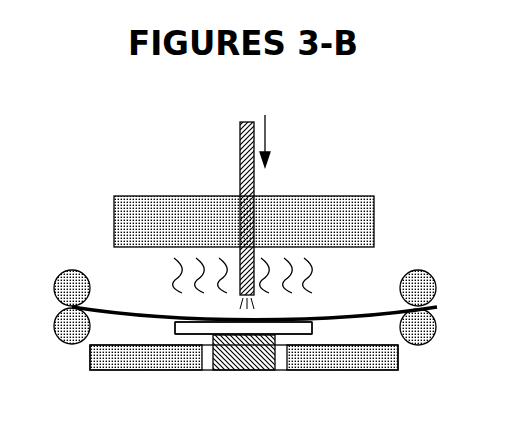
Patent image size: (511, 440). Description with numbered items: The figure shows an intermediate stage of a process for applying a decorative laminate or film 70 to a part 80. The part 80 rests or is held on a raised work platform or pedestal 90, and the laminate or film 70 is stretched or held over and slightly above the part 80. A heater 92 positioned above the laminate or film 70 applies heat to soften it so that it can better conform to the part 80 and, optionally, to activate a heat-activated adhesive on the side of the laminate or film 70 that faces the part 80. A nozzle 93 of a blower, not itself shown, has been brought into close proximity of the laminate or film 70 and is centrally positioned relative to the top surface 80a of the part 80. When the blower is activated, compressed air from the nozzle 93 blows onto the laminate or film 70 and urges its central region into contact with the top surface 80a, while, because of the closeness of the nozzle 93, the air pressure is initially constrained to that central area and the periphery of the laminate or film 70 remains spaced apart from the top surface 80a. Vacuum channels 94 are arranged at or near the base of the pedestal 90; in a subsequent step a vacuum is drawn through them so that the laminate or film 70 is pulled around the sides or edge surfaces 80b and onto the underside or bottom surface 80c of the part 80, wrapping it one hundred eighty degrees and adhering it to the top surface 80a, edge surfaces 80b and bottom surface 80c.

The decorative laminate or film 70 is at (378, 308).
The part 80 is at (287, 328).
The top surface 80a is at (305, 321).
The sides or edge surfaces 80b is at (174, 326).
The underside or bottom surface 80c is at (300, 334).
The raised work platform or pedestal 90 is at (247, 358).
The heater 92 is at (163, 203).
The nozzle 93 is at (245, 143).
The vacuum channels 94 is at (205, 353).